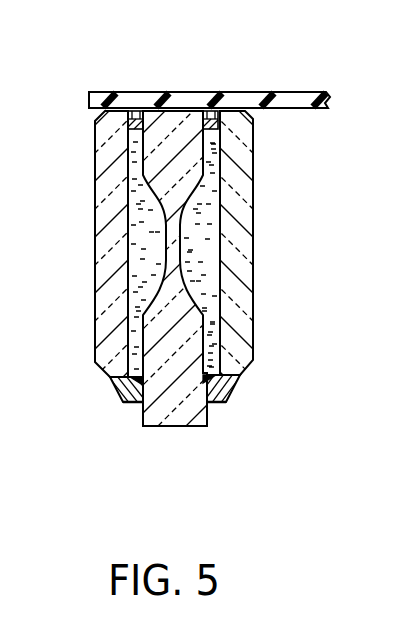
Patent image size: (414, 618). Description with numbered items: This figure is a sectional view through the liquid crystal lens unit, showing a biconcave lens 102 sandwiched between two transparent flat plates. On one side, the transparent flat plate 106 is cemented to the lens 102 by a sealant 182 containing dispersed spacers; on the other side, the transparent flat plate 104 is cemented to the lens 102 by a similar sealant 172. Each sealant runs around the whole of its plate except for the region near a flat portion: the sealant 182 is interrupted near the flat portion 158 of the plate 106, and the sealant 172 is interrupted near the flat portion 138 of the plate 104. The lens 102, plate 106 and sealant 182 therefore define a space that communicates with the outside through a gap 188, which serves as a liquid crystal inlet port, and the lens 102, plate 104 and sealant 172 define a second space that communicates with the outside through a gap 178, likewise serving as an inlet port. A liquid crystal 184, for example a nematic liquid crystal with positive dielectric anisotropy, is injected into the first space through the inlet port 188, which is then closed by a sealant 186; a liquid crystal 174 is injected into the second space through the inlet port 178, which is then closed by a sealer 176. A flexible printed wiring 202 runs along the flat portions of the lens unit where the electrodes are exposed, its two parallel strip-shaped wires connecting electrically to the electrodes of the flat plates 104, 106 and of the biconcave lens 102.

The flexible printed wiring 202 is at (178, 92).
The sealant 182 is at (133, 110).
The sealant 172 is at (215, 110).
The transparent flat plate 106 is at (100, 313).
The transparent flat plate 104 is at (250, 317).
The liquid crystal 184 is at (138, 238).
The liquid crystal 174 is at (208, 263).
The biconcave lens 102 is at (175, 412).
The gap 188 is at (137, 372).
The gap 178 is at (215, 373).
The flat portion 158 is at (117, 390).
The flat portion 138 is at (233, 383).
The sealant 186 is at (125, 402).
The sealer 176 is at (222, 402).